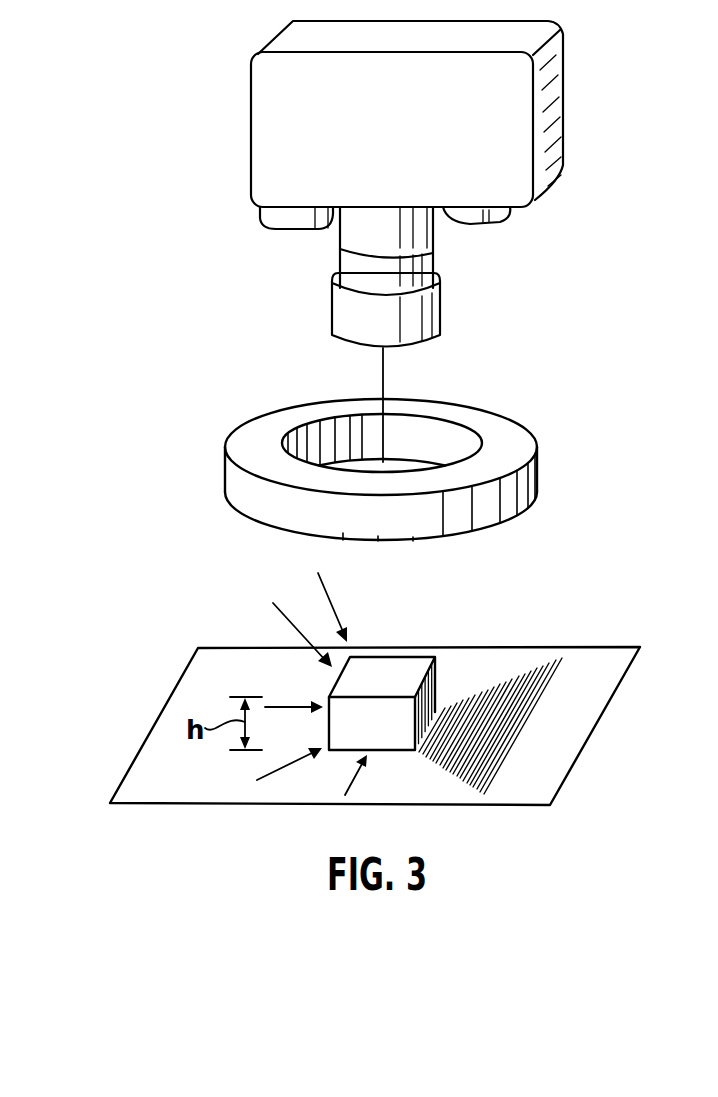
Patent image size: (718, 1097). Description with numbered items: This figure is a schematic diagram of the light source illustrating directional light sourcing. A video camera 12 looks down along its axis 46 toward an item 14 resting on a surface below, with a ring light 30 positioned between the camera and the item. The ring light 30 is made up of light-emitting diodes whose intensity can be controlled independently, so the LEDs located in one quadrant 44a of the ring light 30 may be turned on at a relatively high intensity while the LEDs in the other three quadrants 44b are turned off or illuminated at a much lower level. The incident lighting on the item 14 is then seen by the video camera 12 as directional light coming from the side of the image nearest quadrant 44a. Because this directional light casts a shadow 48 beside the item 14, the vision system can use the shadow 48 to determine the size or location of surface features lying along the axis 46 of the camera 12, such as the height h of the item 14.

The video camera 12 is at (402, 143).
The axis of camera 46 is at (383, 377).
The ring light 30 is at (362, 474).
The quadrant of ring light 44a is at (212, 465).
The other three quadrants of ring light 44b is at (507, 538).
The item 14 is at (384, 735).
The shadow 48 is at (500, 712).